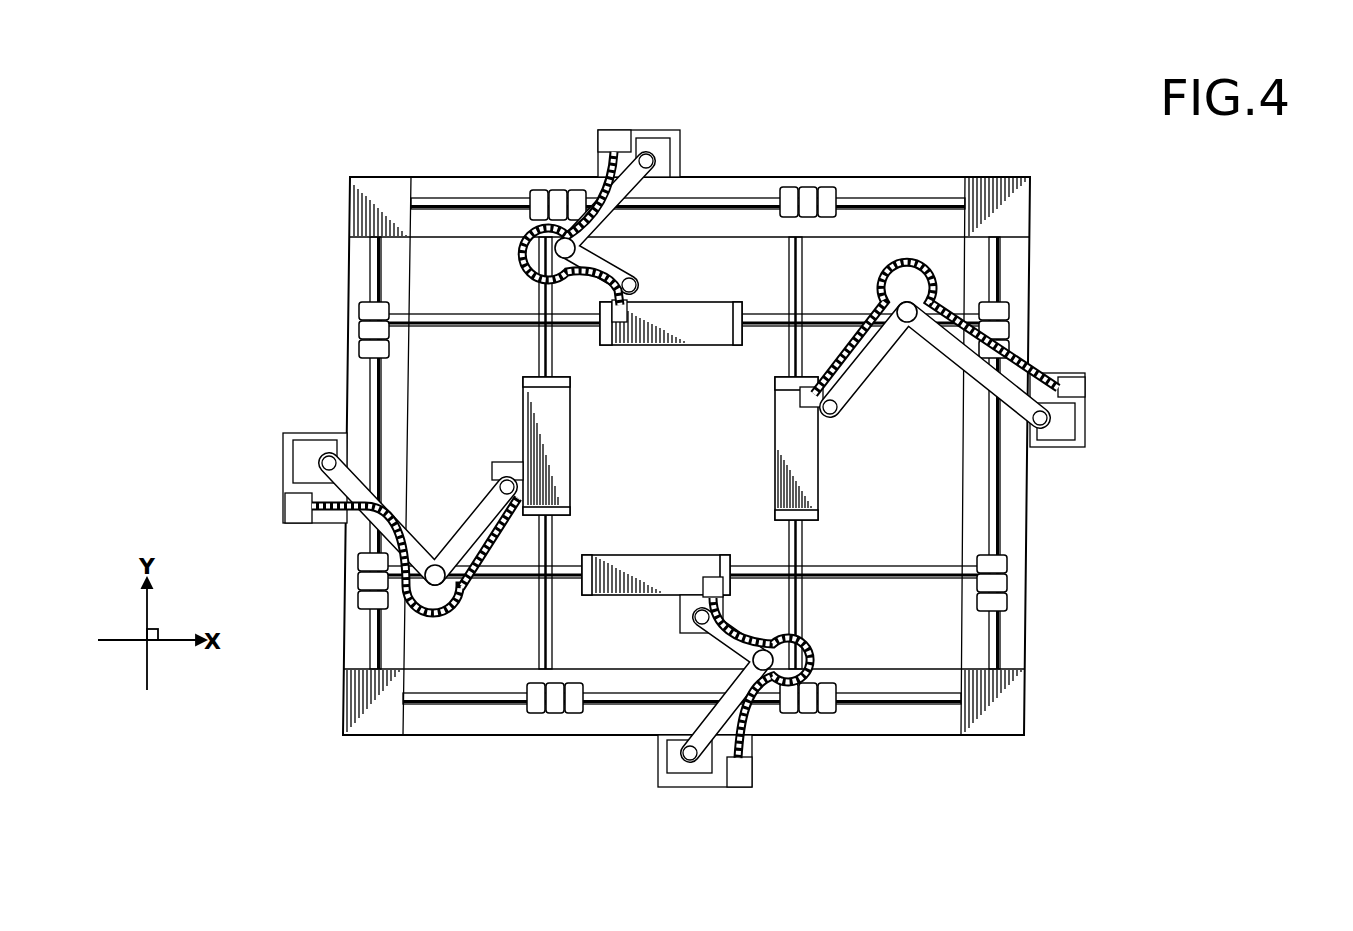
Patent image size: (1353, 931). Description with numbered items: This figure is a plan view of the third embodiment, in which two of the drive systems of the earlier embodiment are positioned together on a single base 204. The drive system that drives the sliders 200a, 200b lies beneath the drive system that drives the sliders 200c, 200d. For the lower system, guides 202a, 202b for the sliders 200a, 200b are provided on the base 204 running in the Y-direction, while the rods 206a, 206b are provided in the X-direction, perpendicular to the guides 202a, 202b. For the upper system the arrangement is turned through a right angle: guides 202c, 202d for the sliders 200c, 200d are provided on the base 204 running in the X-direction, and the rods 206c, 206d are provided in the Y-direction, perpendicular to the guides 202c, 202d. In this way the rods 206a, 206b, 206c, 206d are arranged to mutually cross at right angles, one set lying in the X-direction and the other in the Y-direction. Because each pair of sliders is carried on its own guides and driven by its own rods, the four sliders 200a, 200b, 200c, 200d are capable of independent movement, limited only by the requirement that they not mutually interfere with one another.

The slider 200a is at (685, 328).
The slider 200b is at (641, 578).
The slider 200c is at (801, 462).
The slider 200d is at (533, 410).
The guide 202a is at (1000, 508).
The guide 202b is at (367, 385).
The guide 202c is at (890, 200).
The guide 202d is at (462, 704).
The base 204 is at (1015, 636).
The rod 206a is at (840, 308).
The rod 206b is at (890, 578).
The rod 206c is at (806, 580).
The rod 206d is at (562, 545).